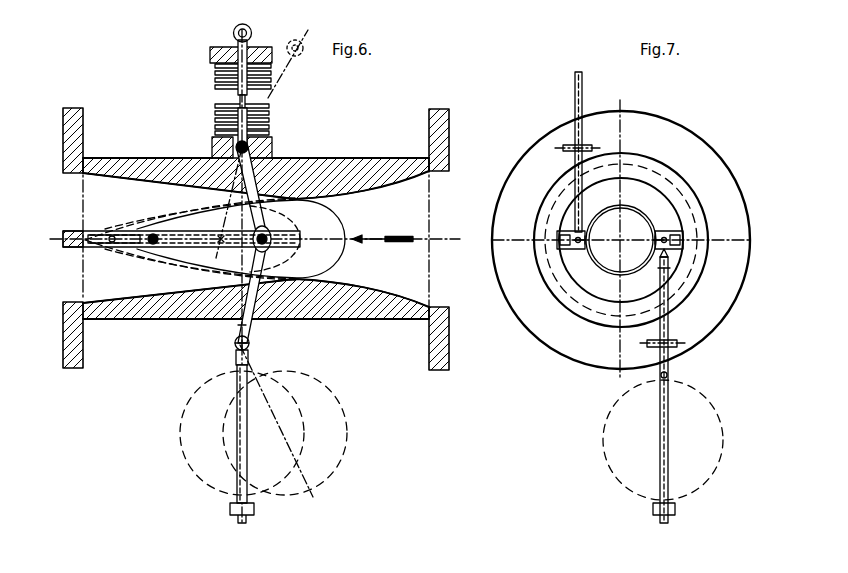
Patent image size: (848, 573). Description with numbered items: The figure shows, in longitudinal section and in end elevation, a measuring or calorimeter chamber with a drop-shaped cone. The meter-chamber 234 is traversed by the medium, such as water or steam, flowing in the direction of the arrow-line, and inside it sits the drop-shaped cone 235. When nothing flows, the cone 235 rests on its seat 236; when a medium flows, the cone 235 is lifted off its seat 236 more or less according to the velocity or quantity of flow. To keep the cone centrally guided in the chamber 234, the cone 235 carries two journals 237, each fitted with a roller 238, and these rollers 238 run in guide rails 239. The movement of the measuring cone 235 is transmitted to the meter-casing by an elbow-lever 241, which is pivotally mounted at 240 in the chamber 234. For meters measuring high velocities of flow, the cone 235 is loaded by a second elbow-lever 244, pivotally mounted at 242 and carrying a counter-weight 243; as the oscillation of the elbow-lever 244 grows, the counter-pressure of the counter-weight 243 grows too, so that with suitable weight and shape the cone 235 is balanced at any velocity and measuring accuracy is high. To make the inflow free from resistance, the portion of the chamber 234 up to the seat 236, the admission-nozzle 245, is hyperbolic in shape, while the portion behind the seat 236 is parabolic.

In FIG. 6, the meter-chamber 234 is at (357, 308).
In FIG. 7, the meter-chamber 234 is at (621, 240).
In FIG. 6, the drop-shaped cone 235 is at (355, 172).
In FIG. 6, the seat 236 is at (302, 192).
In FIG. 6, the journals 237 is at (153, 246).
In FIG. 7, the journals 237 is at (668, 232).
In FIG. 7, the roller 238 is at (558, 246).
In FIG. 6, the guide rails 239 is at (60, 238).
In FIG. 7, the guide rails 239 is at (670, 232).
In FIG. 6, the pivot 240 is at (262, 139).
In FIG. 7, the pivot 240 is at (583, 145).
In FIG. 6, the elbow-lever 241 is at (240, 88).
In FIG. 7, the elbow-lever 241 is at (576, 94).
In FIG. 6, the pivot 242 is at (236, 345).
In FIG. 7, the pivot 242 is at (653, 346).
In FIG. 6, the counter-weight 243 is at (190, 408).
In FIG. 7, the counter-weight 243 is at (706, 416).
In FIG. 6, the elbow-lever 244 is at (249, 362).
In FIG. 7, the elbow-lever 244 is at (665, 272).
In FIG. 6, the admission-nozzle 245 is at (415, 212).
In FIG. 7, the admission-nozzle 245 is at (621, 240).